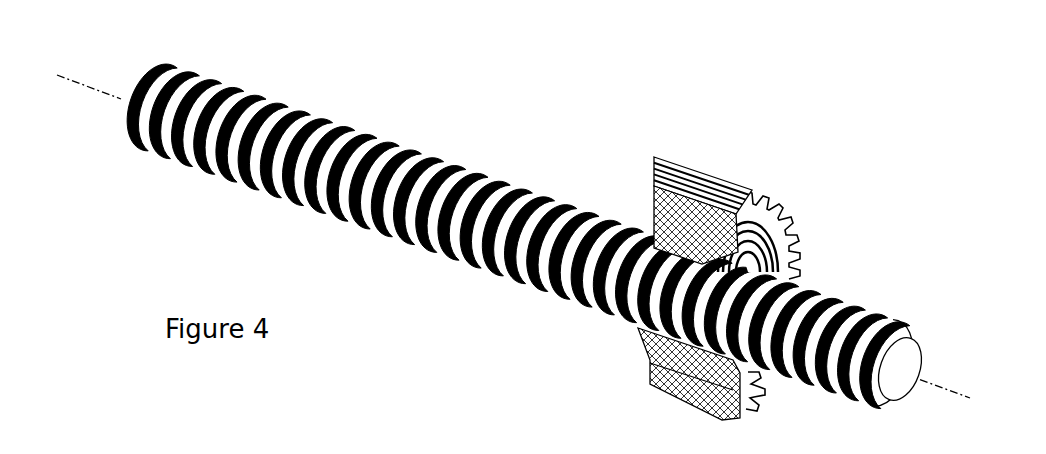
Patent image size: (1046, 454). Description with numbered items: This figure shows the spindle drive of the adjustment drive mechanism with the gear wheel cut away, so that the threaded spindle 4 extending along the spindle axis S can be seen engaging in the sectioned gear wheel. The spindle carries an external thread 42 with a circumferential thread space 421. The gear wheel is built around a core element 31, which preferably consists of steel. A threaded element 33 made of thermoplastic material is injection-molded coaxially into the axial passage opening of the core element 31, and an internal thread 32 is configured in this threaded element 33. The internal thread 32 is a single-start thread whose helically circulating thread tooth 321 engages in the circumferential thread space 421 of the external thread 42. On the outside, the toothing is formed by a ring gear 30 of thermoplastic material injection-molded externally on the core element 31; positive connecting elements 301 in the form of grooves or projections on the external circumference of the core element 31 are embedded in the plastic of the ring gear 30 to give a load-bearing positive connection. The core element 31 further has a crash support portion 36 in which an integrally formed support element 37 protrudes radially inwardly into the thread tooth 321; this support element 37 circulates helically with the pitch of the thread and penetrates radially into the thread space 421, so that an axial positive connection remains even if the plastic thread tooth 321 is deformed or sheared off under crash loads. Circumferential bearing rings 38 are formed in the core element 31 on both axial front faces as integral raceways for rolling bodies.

The threaded spindle 4 is at (415, 128).
The external thread 42 is at (152, 72).
The circumferential thread space 421 is at (190, 80).
The core element 31 is at (647, 173).
The positive connecting elements 301 is at (698, 152).
The threaded element 33 is at (688, 222).
The internal thread 32 is at (672, 248).
The thread tooth 321 is at (636, 279).
The bearing rings 38 is at (782, 236).
The ring gear 30 is at (783, 240).
The crash support portion 36 is at (778, 262).
The support element 37 is at (783, 279).
The spindle axis S is at (946, 388).